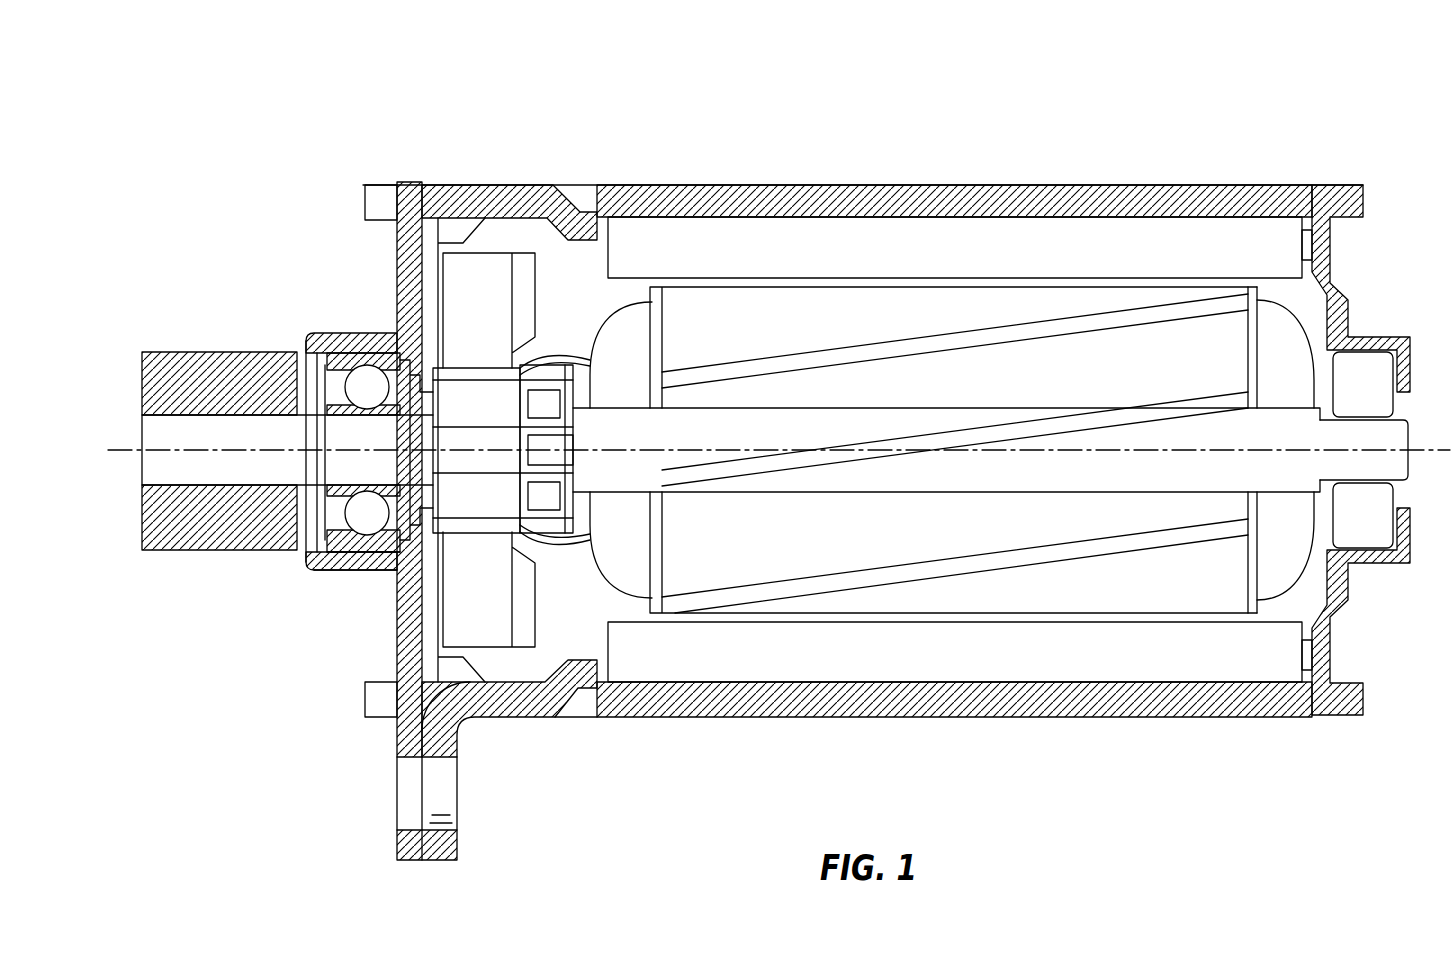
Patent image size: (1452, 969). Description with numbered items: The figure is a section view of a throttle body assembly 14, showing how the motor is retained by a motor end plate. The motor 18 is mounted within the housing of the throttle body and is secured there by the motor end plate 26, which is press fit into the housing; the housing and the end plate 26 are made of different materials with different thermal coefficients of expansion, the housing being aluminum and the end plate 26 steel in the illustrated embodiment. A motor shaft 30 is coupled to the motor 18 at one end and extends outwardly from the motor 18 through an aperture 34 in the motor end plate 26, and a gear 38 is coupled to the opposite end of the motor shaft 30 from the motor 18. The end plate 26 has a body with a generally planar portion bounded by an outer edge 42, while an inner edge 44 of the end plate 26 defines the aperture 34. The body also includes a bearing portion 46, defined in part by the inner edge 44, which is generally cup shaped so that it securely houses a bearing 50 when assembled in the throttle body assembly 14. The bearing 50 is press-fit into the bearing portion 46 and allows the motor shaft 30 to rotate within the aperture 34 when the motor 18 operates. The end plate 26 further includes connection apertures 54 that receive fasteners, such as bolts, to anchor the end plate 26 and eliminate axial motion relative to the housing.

The throttle body assembly 14 is at (953, 110).
The motor 18 is at (858, 308).
The motor end plate 26 is at (395, 287).
The motor shaft 30 is at (152, 467).
The aperture 34 is at (314, 410).
The gear 38 is at (185, 352).
The outer edge 42 is at (411, 182).
The inner edge 44 is at (316, 488).
The bearing portion 46 is at (372, 570).
The bearing 50 is at (333, 543).
The connection apertures 54 is at (411, 828).